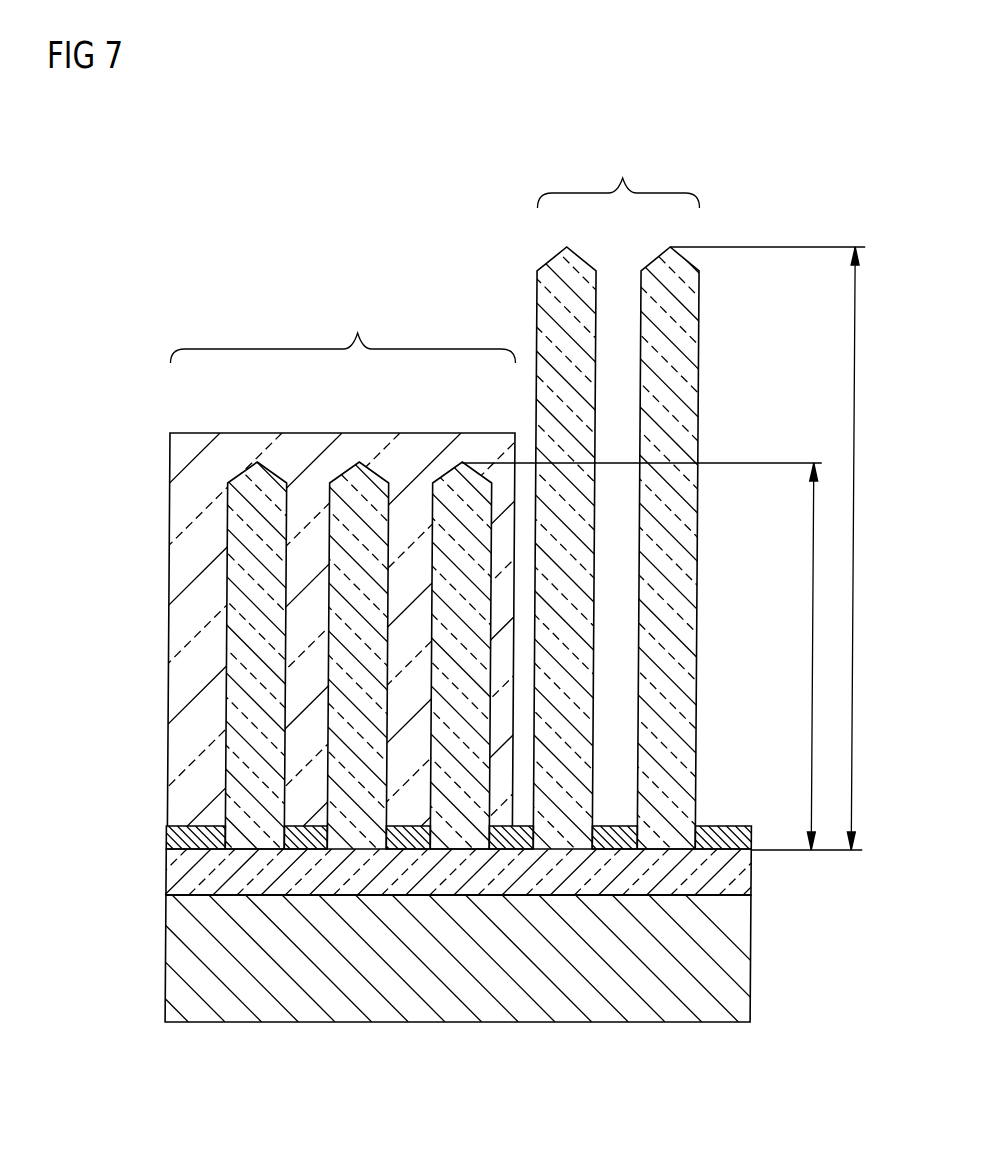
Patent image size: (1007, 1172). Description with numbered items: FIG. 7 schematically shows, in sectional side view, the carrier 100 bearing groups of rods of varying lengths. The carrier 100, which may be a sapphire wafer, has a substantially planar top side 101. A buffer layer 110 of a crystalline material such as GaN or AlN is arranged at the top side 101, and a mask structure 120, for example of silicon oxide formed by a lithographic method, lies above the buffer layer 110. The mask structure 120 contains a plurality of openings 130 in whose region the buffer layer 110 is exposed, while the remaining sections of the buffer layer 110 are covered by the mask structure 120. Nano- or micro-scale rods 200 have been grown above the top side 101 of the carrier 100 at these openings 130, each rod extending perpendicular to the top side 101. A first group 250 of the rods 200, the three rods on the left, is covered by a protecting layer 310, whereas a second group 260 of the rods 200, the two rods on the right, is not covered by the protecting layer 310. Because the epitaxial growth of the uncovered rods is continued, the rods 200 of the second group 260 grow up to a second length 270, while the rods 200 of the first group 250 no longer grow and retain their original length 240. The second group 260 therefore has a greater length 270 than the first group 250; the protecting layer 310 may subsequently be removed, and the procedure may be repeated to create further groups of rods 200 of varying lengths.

The carrier 100 is at (744, 958).
The top side 101 is at (188, 886).
The buffer layer 110 is at (744, 872).
The mask structure 120 is at (752, 826).
The openings 130 is at (641, 840).
The nano- or micro-scale rods 200 is at (441, 610).
The length 240 is at (815, 648).
The first group 250 is at (342, 334).
The second group 260 is at (618, 179).
The second length 270 is at (857, 558).
The protecting layer 310 is at (207, 466).